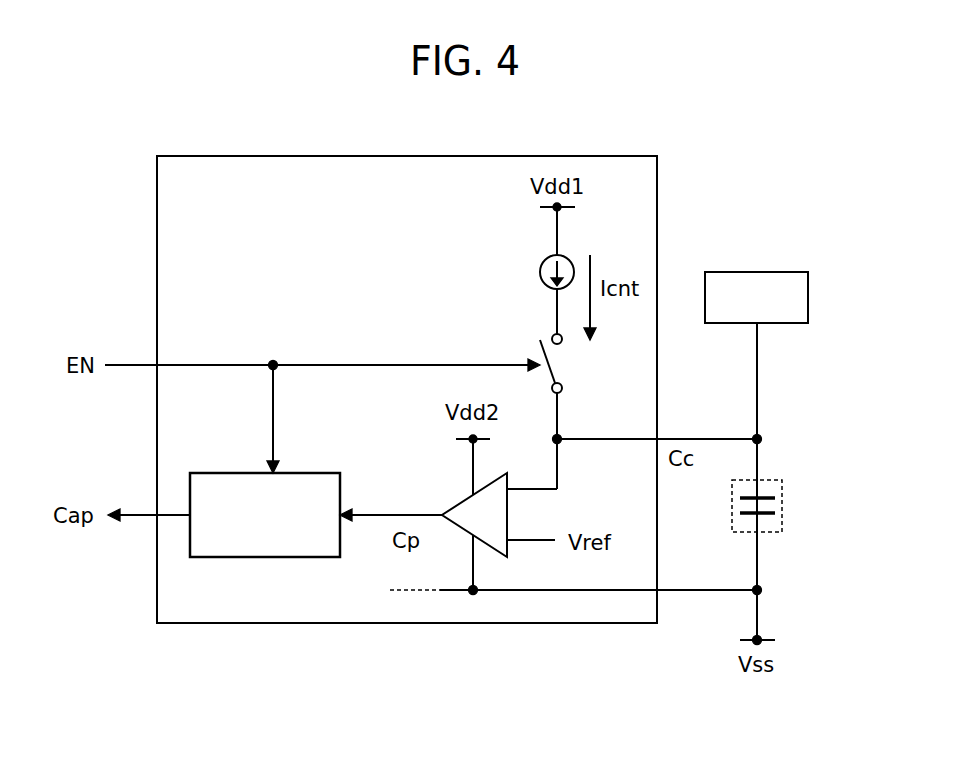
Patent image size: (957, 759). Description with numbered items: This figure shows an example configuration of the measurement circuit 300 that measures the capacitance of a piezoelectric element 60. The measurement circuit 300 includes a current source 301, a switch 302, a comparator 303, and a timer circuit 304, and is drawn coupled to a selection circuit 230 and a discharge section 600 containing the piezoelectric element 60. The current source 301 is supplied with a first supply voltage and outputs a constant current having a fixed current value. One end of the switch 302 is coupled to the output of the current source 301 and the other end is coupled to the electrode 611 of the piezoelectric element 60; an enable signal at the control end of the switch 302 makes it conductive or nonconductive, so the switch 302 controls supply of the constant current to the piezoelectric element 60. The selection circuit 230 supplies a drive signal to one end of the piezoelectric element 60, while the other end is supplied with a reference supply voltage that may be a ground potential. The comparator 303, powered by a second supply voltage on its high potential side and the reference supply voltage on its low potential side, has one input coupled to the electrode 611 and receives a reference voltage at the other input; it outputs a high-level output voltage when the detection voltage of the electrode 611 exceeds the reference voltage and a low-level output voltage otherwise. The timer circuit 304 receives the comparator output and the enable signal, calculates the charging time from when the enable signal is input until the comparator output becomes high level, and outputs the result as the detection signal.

The measurement circuit 300 is at (209, 156).
The current source 301 is at (540, 268).
The switch 302 is at (557, 366).
The comparator 303 is at (447, 504).
The timer circuit 304 is at (209, 473).
The selection circuit 230 is at (725, 272).
The discharge section 600 is at (776, 480).
The electrode 611 is at (776, 499).
The piezoelectric element 60 is at (776, 515).